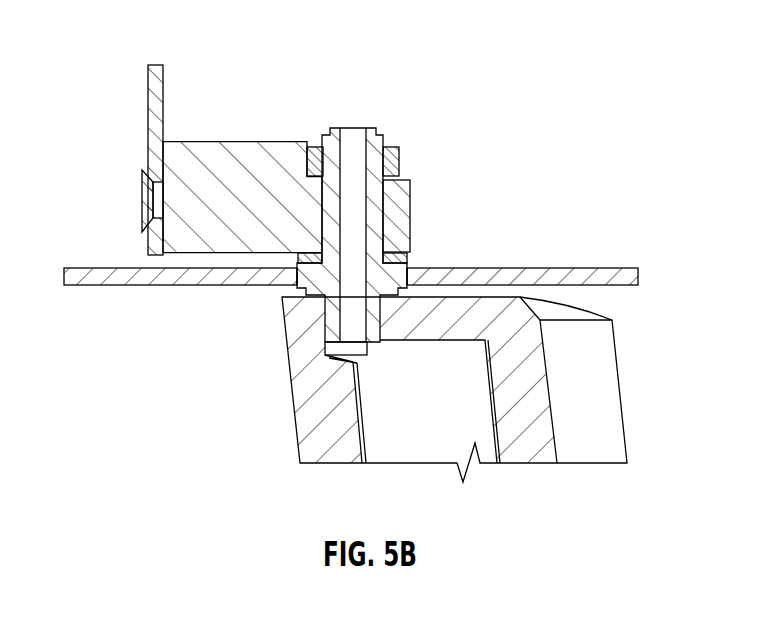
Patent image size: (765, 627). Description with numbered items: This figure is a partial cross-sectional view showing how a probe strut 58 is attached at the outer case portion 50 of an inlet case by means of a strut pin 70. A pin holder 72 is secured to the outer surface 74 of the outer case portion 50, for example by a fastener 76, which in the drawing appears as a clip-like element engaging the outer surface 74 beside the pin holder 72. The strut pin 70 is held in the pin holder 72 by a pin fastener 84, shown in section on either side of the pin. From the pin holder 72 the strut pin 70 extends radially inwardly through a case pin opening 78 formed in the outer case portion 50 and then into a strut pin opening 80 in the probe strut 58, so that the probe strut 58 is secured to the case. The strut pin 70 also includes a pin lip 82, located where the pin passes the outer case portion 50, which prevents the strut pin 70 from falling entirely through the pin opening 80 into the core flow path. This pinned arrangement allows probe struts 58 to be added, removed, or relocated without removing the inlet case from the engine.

The outer case portion 50 is at (495, 268).
The probe strut 58 is at (432, 450).
The strut pin 70 is at (360, 215).
The pin holder 72 is at (238, 152).
The outer surface 74 is at (148, 116).
The fastener 76 is at (142, 202).
The case pin opening 78 is at (295, 273).
The strut pin opening 80 is at (322, 334).
The pin lip 82 is at (405, 256).
The pin fastener 84 is at (397, 150).